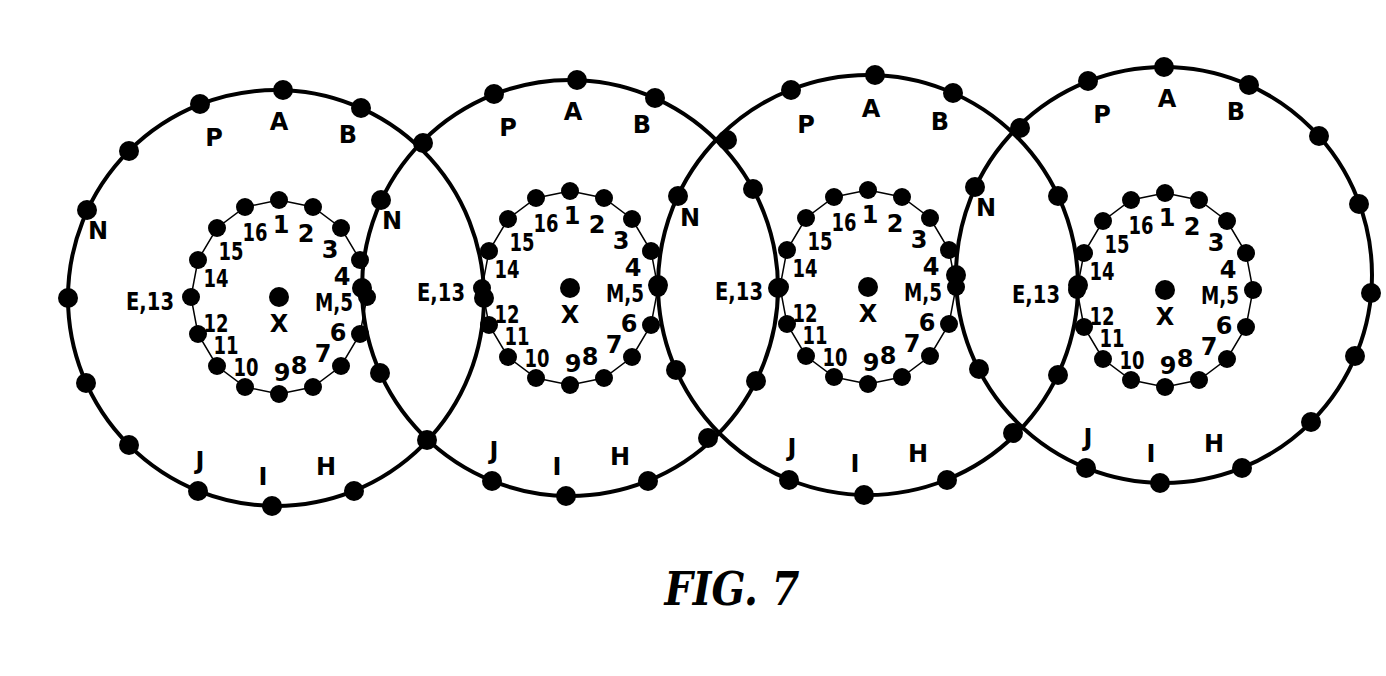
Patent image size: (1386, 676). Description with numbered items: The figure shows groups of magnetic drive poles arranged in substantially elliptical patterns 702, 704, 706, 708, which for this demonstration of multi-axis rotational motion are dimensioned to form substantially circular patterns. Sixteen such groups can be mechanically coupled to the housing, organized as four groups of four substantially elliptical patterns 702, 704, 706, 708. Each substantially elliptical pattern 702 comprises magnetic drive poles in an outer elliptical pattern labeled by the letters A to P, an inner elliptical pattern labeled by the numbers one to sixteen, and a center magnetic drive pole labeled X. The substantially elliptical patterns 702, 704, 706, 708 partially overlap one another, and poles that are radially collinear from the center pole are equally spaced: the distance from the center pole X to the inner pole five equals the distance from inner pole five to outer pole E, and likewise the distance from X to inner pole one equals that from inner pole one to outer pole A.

The substantially elliptical pattern 702 is at (1165, 290).
The substantially elliptical pattern 704 is at (868, 287).
The substantially elliptical pattern 706 is at (570, 288).
The substantially elliptical pattern 708 is at (279, 297).